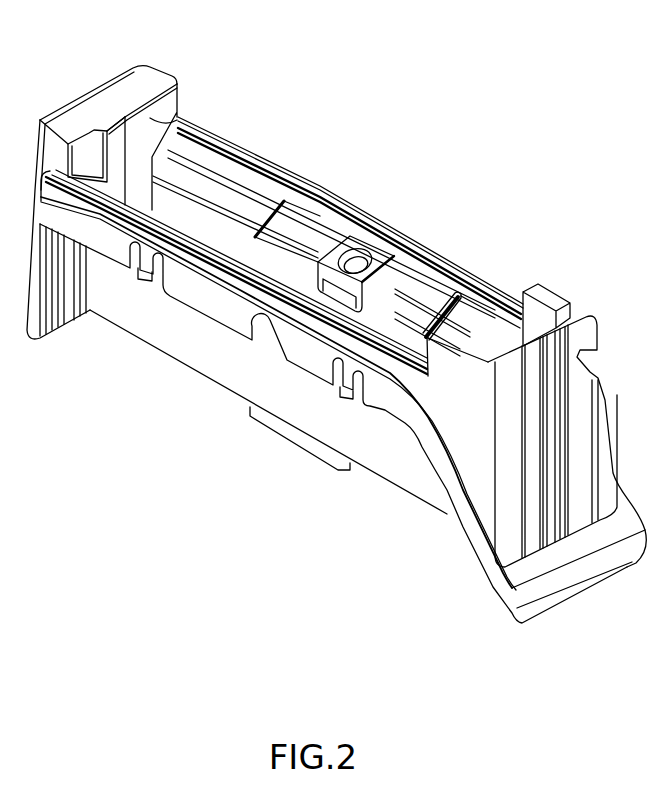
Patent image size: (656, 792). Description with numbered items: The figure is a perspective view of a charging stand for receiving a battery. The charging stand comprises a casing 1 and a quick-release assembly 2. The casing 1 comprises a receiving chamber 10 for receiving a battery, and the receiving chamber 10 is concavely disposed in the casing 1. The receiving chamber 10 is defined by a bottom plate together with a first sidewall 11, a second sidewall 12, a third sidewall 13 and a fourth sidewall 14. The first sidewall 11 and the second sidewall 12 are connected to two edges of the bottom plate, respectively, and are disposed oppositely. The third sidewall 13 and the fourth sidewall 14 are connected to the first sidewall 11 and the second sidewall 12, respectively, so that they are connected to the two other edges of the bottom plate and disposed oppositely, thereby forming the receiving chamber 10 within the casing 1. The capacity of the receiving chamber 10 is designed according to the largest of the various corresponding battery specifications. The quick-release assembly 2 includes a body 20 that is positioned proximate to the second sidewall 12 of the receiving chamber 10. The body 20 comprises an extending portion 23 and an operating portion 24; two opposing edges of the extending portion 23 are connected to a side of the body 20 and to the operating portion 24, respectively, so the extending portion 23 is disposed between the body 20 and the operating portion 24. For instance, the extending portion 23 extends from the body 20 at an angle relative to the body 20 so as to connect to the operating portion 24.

The casing 1 is at (580, 318).
The quick-release assembly 2 is at (193, 147).
The receiving chamber 10 is at (153, 124).
The first sidewall 11 is at (410, 363).
The second sidewall 12 is at (473, 275).
The third sidewall 13 is at (503, 353).
The fourth sidewall 14 is at (115, 137).
The body 20 is at (228, 167).
The extending portion 23 is at (265, 203).
The operating portion 24 is at (297, 193).